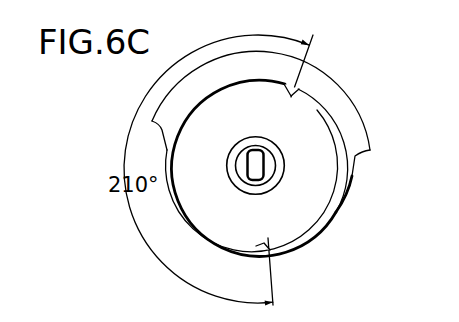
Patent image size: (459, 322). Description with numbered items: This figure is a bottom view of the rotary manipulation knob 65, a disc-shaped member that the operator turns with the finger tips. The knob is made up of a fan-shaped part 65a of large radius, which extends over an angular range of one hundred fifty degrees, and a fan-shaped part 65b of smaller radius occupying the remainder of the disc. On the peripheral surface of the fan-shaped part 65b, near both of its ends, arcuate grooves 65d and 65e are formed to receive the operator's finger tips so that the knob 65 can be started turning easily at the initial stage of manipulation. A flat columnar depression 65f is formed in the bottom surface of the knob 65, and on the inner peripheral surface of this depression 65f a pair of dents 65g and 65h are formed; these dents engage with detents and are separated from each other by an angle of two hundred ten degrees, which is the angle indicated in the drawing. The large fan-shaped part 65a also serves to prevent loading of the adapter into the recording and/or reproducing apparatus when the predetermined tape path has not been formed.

The rotary manipulation knob 65 is at (358, 56).
The fan-shaped part of large radius 65a is at (355, 100).
The fan-shaped part of small radius 65b is at (305, 246).
The arcuate groove 65d is at (163, 150).
The arcuate groove 65e is at (343, 188).
The flat columnar depression 65f is at (195, 207).
The dent 65g is at (269, 240).
The dent 65h is at (291, 98).